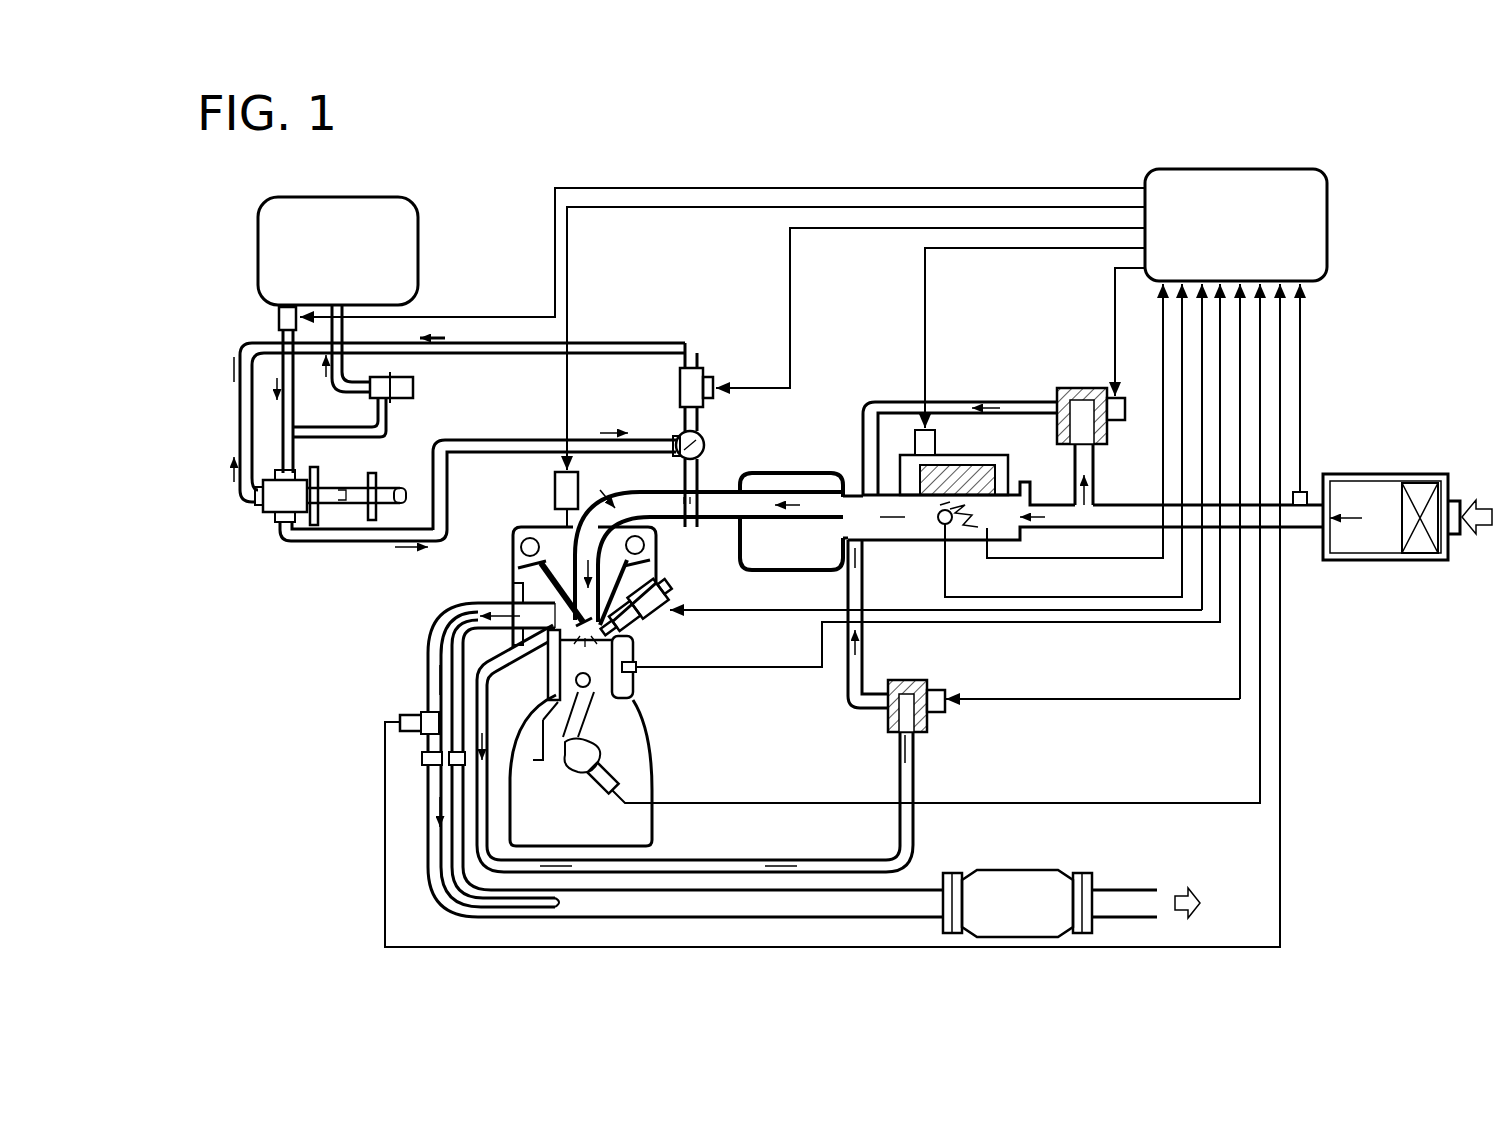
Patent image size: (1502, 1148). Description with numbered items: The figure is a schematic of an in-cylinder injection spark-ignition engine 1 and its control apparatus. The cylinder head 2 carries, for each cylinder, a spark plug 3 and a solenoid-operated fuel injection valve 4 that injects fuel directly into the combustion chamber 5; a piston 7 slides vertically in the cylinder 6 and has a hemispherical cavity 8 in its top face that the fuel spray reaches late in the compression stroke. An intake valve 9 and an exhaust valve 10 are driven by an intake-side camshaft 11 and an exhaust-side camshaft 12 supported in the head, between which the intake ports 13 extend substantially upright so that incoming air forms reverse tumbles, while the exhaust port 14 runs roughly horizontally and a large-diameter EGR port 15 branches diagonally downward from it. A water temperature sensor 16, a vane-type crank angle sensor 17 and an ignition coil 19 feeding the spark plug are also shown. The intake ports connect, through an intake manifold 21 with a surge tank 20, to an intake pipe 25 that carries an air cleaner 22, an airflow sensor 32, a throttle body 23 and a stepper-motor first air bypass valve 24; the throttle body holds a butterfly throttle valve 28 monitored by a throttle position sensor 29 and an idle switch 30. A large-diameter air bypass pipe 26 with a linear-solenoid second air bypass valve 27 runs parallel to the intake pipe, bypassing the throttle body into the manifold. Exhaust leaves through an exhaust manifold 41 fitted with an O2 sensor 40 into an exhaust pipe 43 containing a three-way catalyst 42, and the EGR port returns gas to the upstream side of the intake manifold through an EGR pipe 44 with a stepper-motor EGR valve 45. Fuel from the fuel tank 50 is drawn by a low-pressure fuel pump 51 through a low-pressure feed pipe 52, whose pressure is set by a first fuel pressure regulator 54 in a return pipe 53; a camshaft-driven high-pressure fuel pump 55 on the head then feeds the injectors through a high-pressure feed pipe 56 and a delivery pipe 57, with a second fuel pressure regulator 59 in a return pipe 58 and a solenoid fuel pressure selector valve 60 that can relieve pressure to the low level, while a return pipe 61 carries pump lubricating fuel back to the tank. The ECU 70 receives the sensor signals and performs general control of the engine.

The engine 1 is at (664, 750).
The cylinder head 2 is at (540, 527).
The spark plug 3 is at (578, 603).
The fuel injection valve 4 is at (651, 618).
The combustion chamber 5 is at (560, 648).
The cylinder 6 is at (624, 706).
The piston 7 is at (548, 683).
The cavity 8 is at (640, 654).
The intake valve 9 is at (936, 448).
The exhaust valve 10 is at (520, 546).
The intake-side camshaft 11 is at (653, 544).
The exhaust-side camshaft 12 is at (401, 486).
The intake ports 13 is at (585, 518).
The exhaust port 14 is at (530, 604).
The EGR port 15 is at (476, 604).
The water temperature sensor 16 is at (640, 678).
The crank angle sensor 17 is at (617, 778).
The ignition coil 19 is at (556, 480).
The surge tank 20 is at (793, 490).
The intake manifold 21 is at (705, 490).
The air cleaner 22 is at (1412, 483).
The throttle body 23 is at (932, 540).
The first air bypass valve 24 is at (934, 441).
The intake pipe 25 is at (1128, 505).
The air bypass pipe 26 is at (997, 402).
The second air bypass valve 27 is at (1075, 385).
The throttle valve 28 is at (932, 523).
The throttle position sensor 29 is at (985, 520).
The idle switch 30 is at (950, 525).
The airflow sensor 32 is at (1302, 512).
The O2 sensor 40 is at (403, 716).
The exhaust manifold 41 is at (427, 643).
The three-way catalyst 42 is at (1018, 870).
The exhaust pipe 43 is at (900, 893).
The EGR pipe 44 is at (903, 830).
The EGR valve 45 is at (933, 722).
The fuel tank 50 is at (420, 243).
The low-pressure fuel pump 51 is at (278, 323).
The low-pressure feed pipe 52 is at (294, 463).
The return pipe 53 is at (392, 428).
The first fuel pressure regulator 54 is at (415, 385).
The high-pressure fuel pump 55 is at (268, 514).
The high-pressure feed pipe 56 is at (322, 543).
The delivery pipe 57 is at (700, 438).
The return pipe 58 is at (590, 343).
The second fuel pressure regulator 59 is at (680, 388).
The fuel pressure selector valve 60 is at (712, 378).
The return pipe 61 is at (240, 417).
The ECU 70 is at (1329, 196).